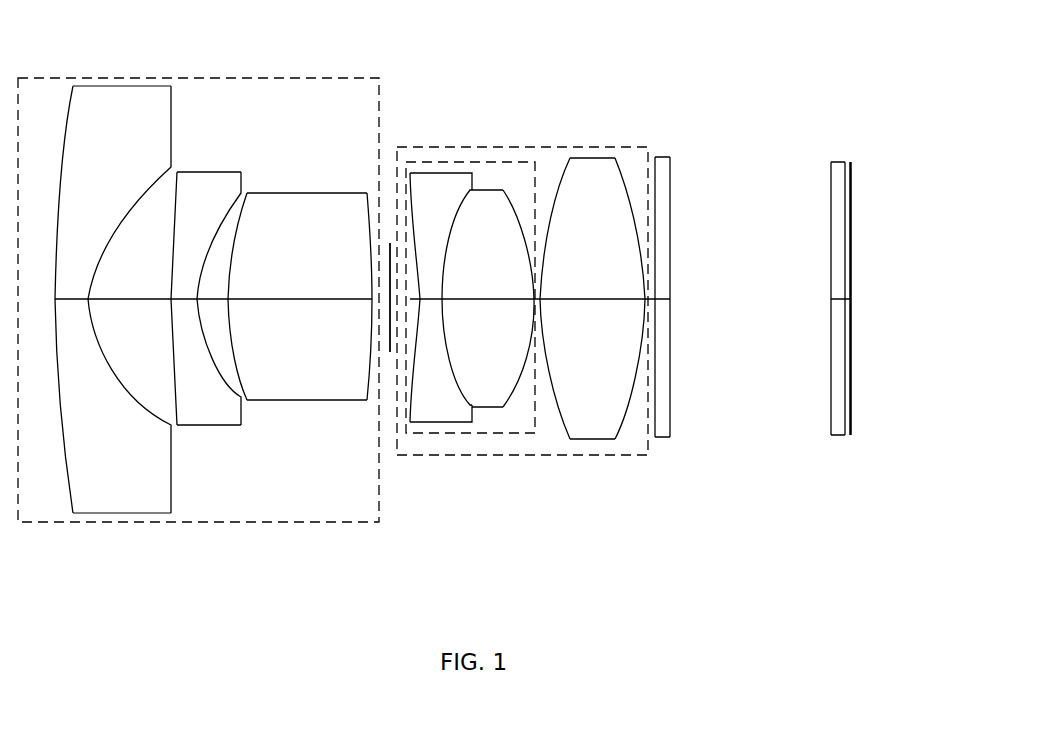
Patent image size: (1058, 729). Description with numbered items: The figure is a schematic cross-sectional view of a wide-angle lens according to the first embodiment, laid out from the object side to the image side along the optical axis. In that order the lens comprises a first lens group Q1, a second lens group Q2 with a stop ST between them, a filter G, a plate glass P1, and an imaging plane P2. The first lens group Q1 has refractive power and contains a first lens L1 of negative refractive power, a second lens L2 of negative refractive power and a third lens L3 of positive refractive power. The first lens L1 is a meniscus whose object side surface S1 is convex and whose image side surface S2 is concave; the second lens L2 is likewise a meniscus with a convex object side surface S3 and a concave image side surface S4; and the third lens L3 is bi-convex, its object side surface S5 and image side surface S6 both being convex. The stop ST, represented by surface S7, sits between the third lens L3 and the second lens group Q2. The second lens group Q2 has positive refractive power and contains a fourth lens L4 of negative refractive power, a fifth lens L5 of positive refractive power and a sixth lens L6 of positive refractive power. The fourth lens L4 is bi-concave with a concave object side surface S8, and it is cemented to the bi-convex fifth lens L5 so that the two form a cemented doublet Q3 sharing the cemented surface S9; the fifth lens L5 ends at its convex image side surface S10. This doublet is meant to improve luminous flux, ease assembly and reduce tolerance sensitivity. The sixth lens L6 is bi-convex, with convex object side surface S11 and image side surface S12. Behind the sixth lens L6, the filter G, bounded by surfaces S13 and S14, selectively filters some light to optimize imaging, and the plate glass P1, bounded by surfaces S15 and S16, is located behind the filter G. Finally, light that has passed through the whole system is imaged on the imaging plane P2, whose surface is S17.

The first lens group Q1 is at (220, 523).
The second lens group Q2 is at (615, 455).
The cemented doublet Q3 is at (470, 433).
The first lens L1 is at (102, 307).
The second lens L2 is at (194, 306).
The third lens L3 is at (280, 307).
The fourth lens L4 is at (470, 301).
The fifth lens L5 is at (530, 300).
The sixth lens L6 is at (637, 300).
The stop ST is at (362, 417).
The filter G is at (736, 299).
The plate glass P1 is at (873, 303).
The imaging plane P2 is at (893, 326).
The object side surface of the first lens S1 is at (65, 470).
The image side surface of the first lens S2 is at (135, 410).
The object side surface of the second lens S3 is at (176, 410).
The image side surface of the second lens S4 is at (215, 373).
The object side surface of the third lens S5 is at (242, 393).
The image side surface of the third lens S6 is at (367, 343).
The stop surface S7 is at (383, 413).
The object side surface of the fourth lens S8 is at (413, 355).
The cemented surface of the fourth and fifth lenses S9 is at (465, 395).
The image side surface of the fifth lens S10 is at (517, 385).
The object side surface of the sixth lens S11 is at (570, 437).
The image side surface of the sixth lens S12 is at (617, 435).
The object side surface of the filter S13 is at (657, 427).
The image side surface of the filter S14 is at (672, 408).
The object side surface of the plate glass S15 is at (833, 417).
The image side surface of the plate glass S16 is at (845, 417).
The imaging plane surface S17 is at (852, 370).